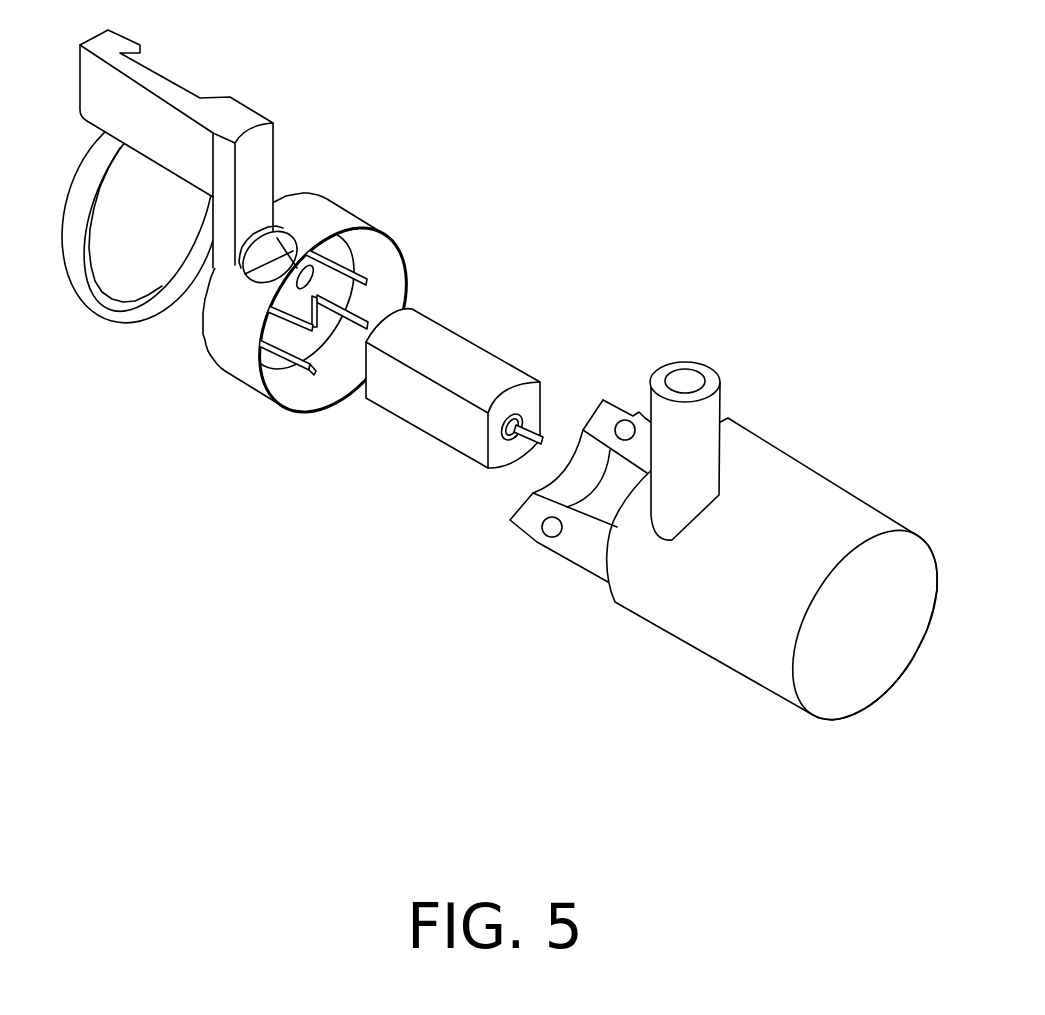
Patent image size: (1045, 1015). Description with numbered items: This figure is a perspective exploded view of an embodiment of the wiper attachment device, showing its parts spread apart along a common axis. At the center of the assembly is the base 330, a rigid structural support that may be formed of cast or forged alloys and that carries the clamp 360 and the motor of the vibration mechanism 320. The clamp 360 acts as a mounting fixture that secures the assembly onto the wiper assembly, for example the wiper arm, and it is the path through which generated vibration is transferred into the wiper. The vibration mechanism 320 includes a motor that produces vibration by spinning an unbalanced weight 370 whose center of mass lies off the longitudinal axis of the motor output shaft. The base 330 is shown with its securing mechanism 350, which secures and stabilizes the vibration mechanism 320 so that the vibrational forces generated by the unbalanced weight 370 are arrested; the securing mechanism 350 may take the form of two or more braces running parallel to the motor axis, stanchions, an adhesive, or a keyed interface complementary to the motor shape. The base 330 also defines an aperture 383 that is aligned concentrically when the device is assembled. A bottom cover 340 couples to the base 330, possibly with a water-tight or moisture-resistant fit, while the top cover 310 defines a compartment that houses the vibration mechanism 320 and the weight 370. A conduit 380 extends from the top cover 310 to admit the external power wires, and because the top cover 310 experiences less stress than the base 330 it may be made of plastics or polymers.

The top cover 310 is at (890, 657).
The vibration mechanism 320 is at (390, 436).
The base 330 is at (204, 396).
The bottom cover 340 is at (70, 313).
The securing mechanism 350 is at (292, 380).
The clamp 360 is at (222, 118).
The unbalanced weight 370 is at (513, 539).
The conduit 380 is at (671, 363).
The aperture 383 is at (290, 232).